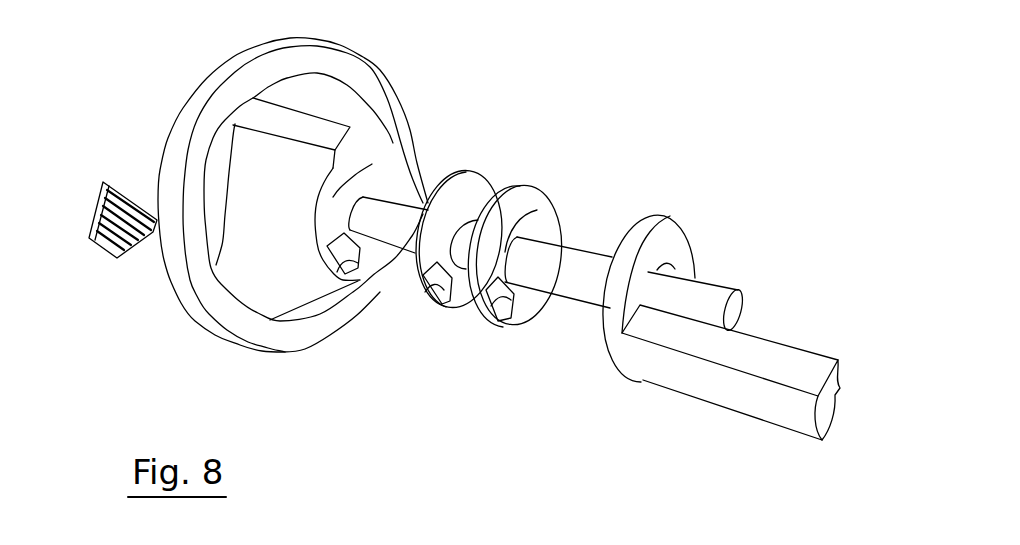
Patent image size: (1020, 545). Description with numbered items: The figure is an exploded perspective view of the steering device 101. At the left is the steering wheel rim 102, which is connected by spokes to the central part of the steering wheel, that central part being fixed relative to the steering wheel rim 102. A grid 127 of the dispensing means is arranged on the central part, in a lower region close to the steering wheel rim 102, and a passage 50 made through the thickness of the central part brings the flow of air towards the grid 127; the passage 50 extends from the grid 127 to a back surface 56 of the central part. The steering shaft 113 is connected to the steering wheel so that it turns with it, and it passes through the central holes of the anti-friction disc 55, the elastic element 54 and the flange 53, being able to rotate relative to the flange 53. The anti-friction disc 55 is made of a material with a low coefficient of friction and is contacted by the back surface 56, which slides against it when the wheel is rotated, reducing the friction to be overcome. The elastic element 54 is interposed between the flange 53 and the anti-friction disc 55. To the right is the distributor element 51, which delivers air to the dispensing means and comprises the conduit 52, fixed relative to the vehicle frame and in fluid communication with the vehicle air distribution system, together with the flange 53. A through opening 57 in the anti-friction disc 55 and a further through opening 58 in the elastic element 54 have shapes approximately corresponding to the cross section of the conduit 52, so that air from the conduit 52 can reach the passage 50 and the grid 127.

The steering device 101 is at (748, 100).
The steering wheel rim 102 is at (225, 103).
The grid 127 is at (101, 183).
The back surface 56 is at (372, 164).
The passage 50 is at (339, 276).
The anti-friction disc 55 is at (462, 194).
The through opening 57 is at (440, 308).
The elastic element 54 is at (532, 214).
The further through opening 58 is at (508, 320).
The steering shaft 113 is at (577, 270).
The flange 53 is at (667, 242).
The conduit 52 is at (731, 381).
The distributor element 51 is at (622, 402).